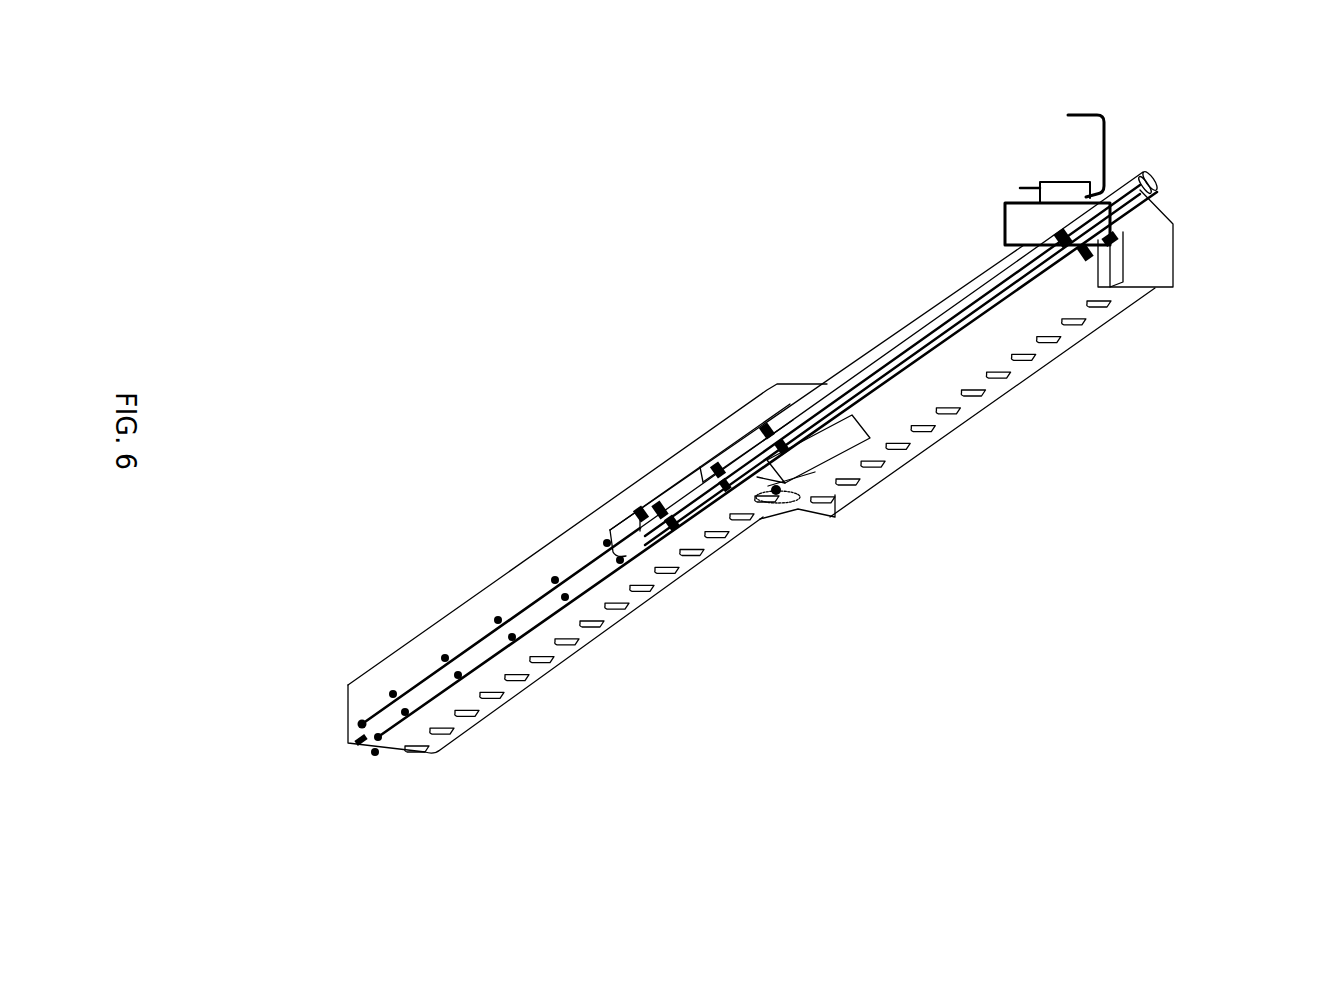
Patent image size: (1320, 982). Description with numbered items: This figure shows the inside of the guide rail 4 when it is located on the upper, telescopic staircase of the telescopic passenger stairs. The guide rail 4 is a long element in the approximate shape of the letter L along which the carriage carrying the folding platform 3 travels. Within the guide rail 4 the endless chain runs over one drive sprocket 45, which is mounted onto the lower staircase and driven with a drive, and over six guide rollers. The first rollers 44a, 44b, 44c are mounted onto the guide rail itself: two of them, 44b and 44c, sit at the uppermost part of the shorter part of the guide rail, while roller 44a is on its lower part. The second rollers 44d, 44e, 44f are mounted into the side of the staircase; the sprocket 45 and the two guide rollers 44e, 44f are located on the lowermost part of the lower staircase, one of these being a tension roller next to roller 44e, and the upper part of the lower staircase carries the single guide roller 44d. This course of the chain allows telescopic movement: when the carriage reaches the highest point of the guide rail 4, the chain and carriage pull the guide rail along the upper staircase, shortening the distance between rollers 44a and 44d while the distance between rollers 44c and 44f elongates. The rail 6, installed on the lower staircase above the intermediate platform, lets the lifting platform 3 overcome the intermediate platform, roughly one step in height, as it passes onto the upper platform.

The folding platform 3 is at (1058, 162).
The guide rail 4 is at (922, 317).
The rail 6 is at (754, 481).
The guide roller 44a is at (648, 518).
The guide roller 44b is at (1123, 215).
The guide roller 44c is at (1122, 236).
The guide roller 44d is at (738, 455).
The guide roller 44e is at (362, 740).
The guide roller 44f is at (375, 750).
The drive sprocket 45 is at (360, 725).